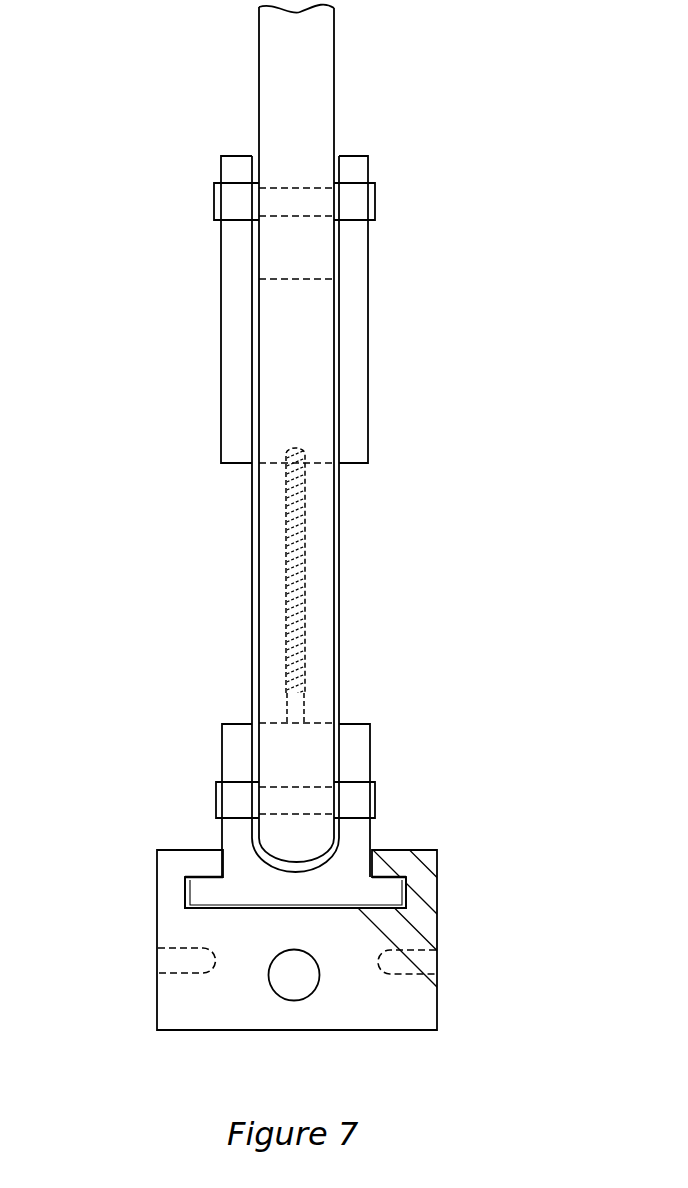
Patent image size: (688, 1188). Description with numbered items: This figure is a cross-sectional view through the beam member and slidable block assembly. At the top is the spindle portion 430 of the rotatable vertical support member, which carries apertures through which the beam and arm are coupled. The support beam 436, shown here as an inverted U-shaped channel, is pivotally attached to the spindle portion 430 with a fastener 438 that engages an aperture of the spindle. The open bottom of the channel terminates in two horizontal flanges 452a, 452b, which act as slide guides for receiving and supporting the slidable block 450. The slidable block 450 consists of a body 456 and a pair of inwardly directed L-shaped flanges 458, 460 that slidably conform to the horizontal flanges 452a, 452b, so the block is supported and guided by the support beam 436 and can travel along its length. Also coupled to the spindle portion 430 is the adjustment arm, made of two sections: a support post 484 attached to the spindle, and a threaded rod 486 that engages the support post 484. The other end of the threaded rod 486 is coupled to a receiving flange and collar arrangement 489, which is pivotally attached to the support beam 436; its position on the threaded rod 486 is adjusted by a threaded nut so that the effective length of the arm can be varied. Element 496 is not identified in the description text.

The spindle portion 430 is at (335, 40).
The support beam 436 is at (348, 857).
The fastener 438 is at (217, 790).
The slidable block 450 is at (230, 1041).
The horizontal flange 452a is at (392, 892).
The horizontal flange 452b is at (205, 892).
The body 456 is at (418, 992).
The L-shaped flange 458 is at (157, 851).
The L-shaped flange 460 is at (437, 856).
The support post 484 is at (235, 352).
The threaded rod 486 is at (302, 580).
The receiving flange and collar arrangement 489 is at (304, 697).
The upper nut 496 is at (372, 198).